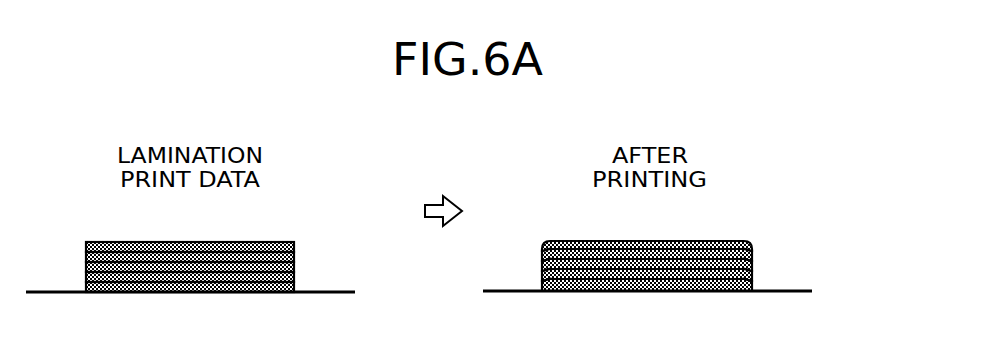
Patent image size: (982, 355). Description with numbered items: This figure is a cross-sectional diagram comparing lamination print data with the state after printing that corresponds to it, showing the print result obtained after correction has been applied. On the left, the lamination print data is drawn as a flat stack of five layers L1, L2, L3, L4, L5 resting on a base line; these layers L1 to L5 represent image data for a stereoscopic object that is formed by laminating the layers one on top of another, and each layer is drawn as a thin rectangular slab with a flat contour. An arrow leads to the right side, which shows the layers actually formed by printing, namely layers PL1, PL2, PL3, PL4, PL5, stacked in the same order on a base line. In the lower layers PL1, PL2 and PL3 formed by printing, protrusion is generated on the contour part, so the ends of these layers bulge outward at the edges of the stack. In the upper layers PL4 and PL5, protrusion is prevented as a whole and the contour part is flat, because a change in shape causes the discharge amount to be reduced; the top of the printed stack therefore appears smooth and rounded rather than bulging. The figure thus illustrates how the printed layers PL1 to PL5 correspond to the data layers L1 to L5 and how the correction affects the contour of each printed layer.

The layer L1 is at (295, 288).
The layer L2 is at (295, 277).
The layer L3 is at (295, 267).
The layer L4 is at (295, 257).
The layer L5 is at (295, 247).
The layer formed by printing PL1 is at (752, 287).
The layer formed by printing PL2 is at (752, 275).
The layer formed by printing PL3 is at (752, 265).
The layer formed by printing PL4 is at (752, 255).
The layer formed by printing PL5 is at (743, 243).